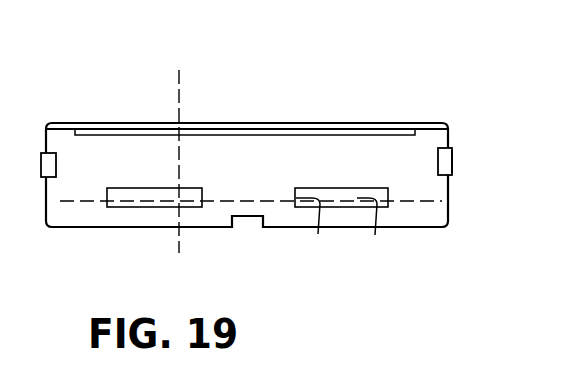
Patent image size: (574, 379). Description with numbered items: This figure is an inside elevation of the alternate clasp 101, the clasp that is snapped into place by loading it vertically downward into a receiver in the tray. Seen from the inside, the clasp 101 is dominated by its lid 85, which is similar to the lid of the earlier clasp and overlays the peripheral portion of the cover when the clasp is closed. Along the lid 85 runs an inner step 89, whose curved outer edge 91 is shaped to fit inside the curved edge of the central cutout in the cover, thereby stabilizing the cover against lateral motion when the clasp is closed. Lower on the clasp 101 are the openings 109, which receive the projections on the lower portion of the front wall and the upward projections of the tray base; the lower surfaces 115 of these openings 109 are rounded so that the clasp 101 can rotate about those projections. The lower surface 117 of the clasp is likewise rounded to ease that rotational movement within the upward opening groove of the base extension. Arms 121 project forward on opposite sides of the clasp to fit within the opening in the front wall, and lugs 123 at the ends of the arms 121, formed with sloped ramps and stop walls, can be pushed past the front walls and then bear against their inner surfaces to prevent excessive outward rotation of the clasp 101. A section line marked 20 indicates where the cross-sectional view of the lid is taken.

The section line 20- 20 is at (207, 86).
The lid 85 is at (310, 122).
The inner step 89 is at (215, 136).
The curved outer edge 91 is at (307, 131).
The clasp 101 is at (417, 59).
The openings 109 is at (341, 229).
The lower surfaces of the openings 115 is at (372, 229).
The lower surface of the clasp 117 is at (418, 228).
The arms 121 is at (438, 162).
The lugs 123 is at (452, 163).